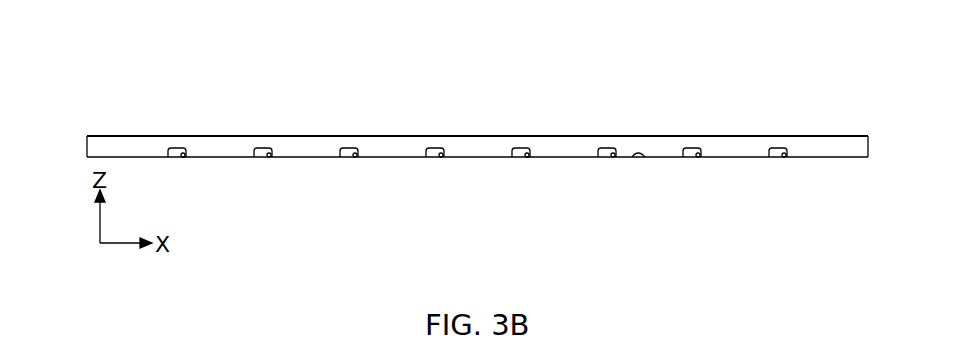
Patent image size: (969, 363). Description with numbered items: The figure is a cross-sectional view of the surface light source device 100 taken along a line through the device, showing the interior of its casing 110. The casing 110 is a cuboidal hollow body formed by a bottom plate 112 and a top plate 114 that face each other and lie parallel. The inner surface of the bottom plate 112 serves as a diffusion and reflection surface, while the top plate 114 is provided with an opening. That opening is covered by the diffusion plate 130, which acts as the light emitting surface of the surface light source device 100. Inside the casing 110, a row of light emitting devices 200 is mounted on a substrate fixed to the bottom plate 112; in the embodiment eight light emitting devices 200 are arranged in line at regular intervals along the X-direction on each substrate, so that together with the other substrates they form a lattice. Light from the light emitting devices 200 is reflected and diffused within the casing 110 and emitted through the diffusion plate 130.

The surface light source device 100 is at (472, 125).
The casing 110 is at (472, 145).
The bottom plate 112 is at (305, 158).
The top plate 114 is at (138, 136).
The diffusion plate 130 is at (333, 136).
The light emitting device 200 is at (520, 154).